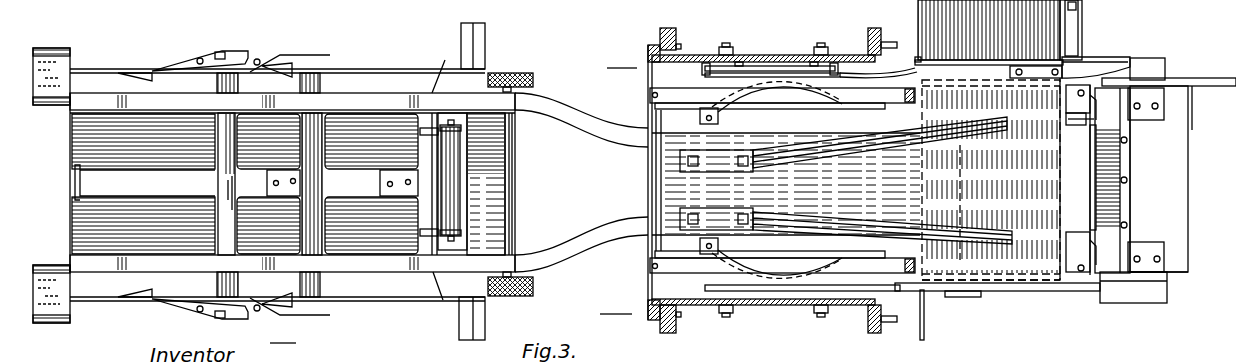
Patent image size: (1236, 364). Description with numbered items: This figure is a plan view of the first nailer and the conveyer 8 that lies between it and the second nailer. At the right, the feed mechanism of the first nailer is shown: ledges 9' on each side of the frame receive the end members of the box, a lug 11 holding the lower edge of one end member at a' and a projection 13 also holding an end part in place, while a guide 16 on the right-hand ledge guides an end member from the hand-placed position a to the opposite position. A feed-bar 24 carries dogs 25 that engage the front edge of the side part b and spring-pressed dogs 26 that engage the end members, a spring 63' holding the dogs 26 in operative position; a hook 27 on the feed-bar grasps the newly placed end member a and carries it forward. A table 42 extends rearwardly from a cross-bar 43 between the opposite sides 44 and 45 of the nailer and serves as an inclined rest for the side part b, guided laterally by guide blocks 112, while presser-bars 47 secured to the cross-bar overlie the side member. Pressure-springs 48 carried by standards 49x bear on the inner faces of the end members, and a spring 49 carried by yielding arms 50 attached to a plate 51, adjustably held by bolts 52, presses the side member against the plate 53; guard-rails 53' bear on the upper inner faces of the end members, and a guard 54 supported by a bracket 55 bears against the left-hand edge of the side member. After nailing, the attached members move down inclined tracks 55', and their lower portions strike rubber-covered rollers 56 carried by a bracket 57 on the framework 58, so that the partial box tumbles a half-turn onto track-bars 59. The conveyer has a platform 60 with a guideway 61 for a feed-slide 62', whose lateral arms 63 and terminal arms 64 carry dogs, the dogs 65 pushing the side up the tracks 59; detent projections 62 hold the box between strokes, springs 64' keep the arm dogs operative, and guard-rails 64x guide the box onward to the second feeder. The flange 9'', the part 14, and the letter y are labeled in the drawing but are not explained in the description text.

The platform 60 is at (143, 141).
The guideway 61 is at (145, 182).
The detent projections 62 is at (245, 230).
The feed-slide 62' is at (327, 174).
The arms 63 is at (297, 184).
The terminal arms 64 is at (431, 184).
The dogs 65 is at (428, 229).
The bracket 57 is at (497, 175).
The framework 58 is at (478, 312).
The rollers 56 is at (533, 78).
The track-bars 59 is at (360, 98).
The springs 64' is at (241, 184).
The guard-rails 64x is at (110, 72).
The inclined tracks 55' is at (581, 180).
The side of the nailer 44 is at (622, 58).
The side of the nailer 45 is at (616, 305).
The conveyer mechanism 8 is at (283, 333).
The flange 9'' is at (670, 182).
The flange 14 is at (875, 335).
The projection 13 is at (921, 340).
The yielding arms 50 is at (712, 62).
The bolts 52 is at (738, 60).
The plate 51 is at (775, 67).
The spring 49 is at (848, 75).
The guard-rails 53' is at (782, 180).
The pressure-springs 48 is at (800, 88).
The standards 49x is at (738, 118).
The table 42 is at (786, 184).
The presser-bars 47 is at (965, 138).
The side part b is at (977, 202).
The guide 16 is at (1115, 62).
The ledges 9' is at (1134, 186).
The end member a is at (1169, 68).
The cross-bar 43 is at (1128, 118).
The dogs 26 is at (1085, 85).
The dogs 25 is at (1066, 108).
The feed-bar 24 is at (1062, 125).
The guide blocks 112 is at (1068, 180).
The spring 63' is at (1132, 180).
The hook 27 is at (1230, 86).
The line y is at (1182, 219).
The guard 54 is at (1045, 291).
The lug 11 is at (975, 297).
The end part a' is at (991, 305).
The plate 53 is at (802, 315).
The bracket 55 is at (1148, 290).